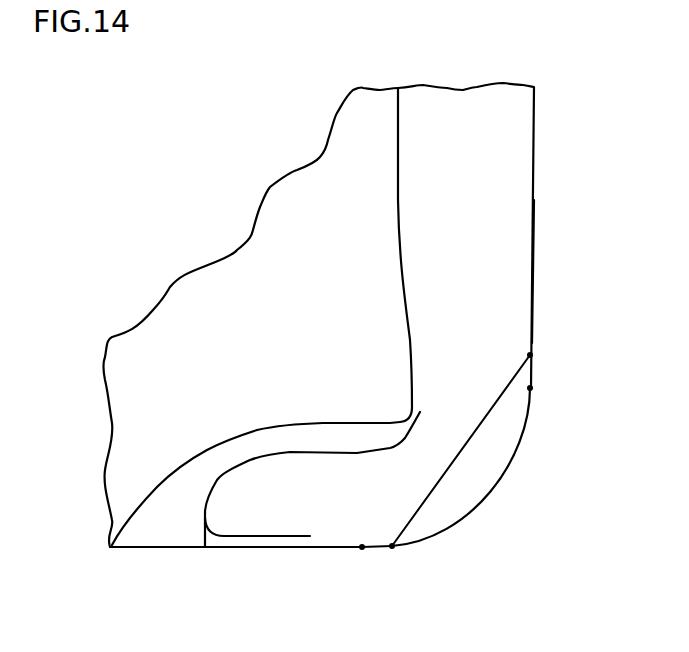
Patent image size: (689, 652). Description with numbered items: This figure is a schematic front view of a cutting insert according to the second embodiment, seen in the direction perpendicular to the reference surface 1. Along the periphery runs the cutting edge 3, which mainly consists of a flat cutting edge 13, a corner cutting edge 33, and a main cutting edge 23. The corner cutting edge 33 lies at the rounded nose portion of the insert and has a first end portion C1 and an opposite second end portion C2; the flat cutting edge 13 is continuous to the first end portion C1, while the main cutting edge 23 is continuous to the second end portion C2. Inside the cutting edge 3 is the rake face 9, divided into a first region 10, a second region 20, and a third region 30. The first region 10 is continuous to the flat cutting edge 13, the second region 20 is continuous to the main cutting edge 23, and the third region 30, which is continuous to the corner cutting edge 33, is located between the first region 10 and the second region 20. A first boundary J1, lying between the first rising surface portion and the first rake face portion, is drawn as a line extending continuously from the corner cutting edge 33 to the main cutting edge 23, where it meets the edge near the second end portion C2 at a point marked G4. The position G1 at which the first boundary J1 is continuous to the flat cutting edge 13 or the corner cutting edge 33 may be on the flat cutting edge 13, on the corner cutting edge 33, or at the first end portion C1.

The reference surface 1 is at (265, 393).
The rake face 9 is at (308, 43).
The first region 10 is at (290, 498).
The second region 20 is at (478, 215).
The third region 30 is at (457, 493).
The cutting edge 3 is at (248, 613).
The flat cutting edge 13 is at (262, 548).
The main cutting edge 23 is at (532, 343).
The corner cutting edge 33 is at (458, 517).
The first end portion C1 is at (362, 549).
The second end portion C2 is at (531, 388).
The position G1 is at (392, 548).
The fourth boundary point G4 is at (532, 355).
The first boundary J1 is at (500, 397).